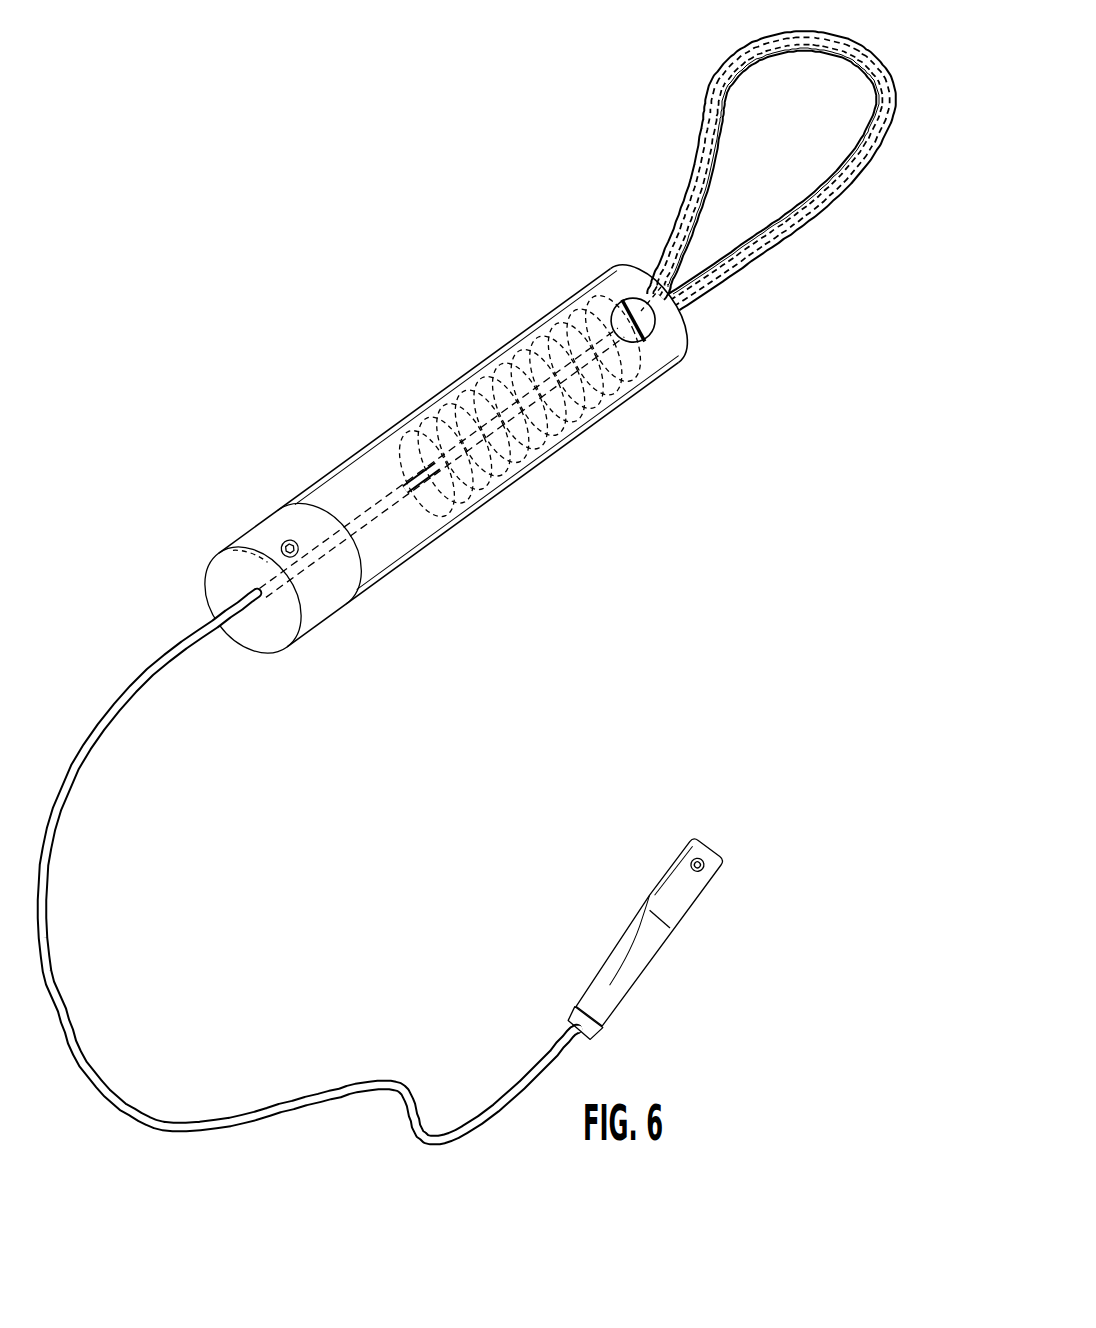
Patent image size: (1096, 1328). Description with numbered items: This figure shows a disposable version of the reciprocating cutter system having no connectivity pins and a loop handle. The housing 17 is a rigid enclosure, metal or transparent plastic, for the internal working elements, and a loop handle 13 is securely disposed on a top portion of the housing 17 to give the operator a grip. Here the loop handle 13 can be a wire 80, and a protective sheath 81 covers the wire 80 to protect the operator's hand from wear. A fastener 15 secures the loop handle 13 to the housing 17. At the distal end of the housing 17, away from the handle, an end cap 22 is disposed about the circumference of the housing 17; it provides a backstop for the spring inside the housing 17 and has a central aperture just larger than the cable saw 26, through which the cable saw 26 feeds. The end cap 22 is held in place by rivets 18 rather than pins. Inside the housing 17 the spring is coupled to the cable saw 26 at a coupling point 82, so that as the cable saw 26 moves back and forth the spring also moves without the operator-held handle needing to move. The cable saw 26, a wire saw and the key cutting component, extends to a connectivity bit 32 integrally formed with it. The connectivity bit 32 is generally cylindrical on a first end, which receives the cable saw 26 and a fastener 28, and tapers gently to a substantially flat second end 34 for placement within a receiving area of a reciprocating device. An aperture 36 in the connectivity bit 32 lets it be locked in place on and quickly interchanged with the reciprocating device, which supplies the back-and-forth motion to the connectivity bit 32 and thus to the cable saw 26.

The loop handle 13 is at (855, 46).
The wire 80 is at (712, 119).
The protective sheath 81 is at (832, 207).
The fastener 15 is at (646, 318).
The housing 17 is at (391, 461).
The rivets 18 is at (284, 542).
The end cap 22 is at (276, 634).
The coupling point 82 is at (437, 487).
The cable saw 26 is at (76, 1056).
The fastener 28 is at (568, 1011).
The connectivity bit 32 is at (648, 946).
The substantially flat second end 34 is at (683, 895).
The aperture 36 is at (706, 862).